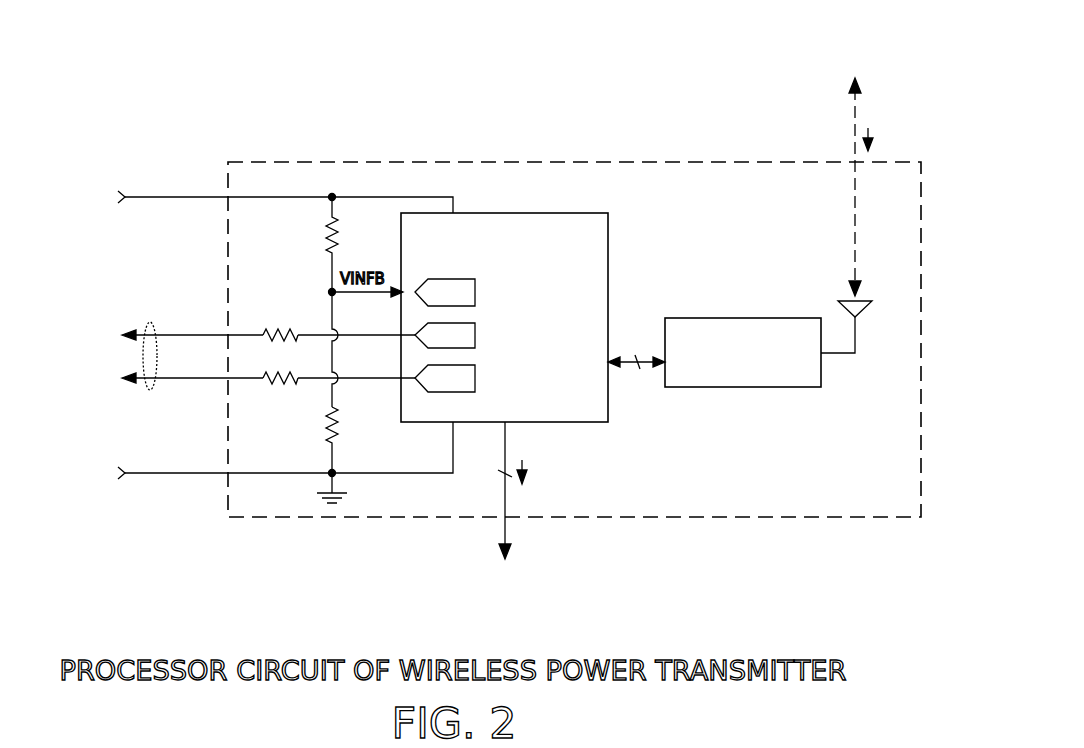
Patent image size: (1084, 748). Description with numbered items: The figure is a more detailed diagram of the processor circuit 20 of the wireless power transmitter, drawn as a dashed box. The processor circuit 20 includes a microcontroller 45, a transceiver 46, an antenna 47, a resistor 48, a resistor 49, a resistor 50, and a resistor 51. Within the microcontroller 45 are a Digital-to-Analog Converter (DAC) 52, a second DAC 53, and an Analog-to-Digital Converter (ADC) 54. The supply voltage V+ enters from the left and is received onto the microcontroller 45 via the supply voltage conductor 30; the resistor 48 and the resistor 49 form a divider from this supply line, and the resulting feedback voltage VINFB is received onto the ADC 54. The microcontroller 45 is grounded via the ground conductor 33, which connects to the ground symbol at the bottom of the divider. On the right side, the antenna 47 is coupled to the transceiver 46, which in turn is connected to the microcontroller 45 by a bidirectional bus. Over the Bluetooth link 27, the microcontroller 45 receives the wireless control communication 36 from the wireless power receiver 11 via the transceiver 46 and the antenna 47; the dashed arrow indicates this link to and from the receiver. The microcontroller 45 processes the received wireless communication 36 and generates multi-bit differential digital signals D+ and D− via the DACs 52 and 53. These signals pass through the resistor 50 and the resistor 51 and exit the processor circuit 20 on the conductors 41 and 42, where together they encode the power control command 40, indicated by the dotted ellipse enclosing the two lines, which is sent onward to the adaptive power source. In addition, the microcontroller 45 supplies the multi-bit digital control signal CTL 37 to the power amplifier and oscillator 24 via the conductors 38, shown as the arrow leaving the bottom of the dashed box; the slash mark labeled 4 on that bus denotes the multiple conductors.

The processor circuit 20 is at (327, 161).
The supply voltage conductor 30 is at (148, 197).
The resistor 48 is at (321, 235).
The resistor 49 is at (341, 432).
The ground conductor 33 is at (159, 478).
The power control command 40 is at (150, 322).
The conductor 41 is at (186, 335).
The conductor 42 is at (186, 378).
The resistor 50 is at (280, 327).
The resistor 51 is at (275, 386).
The microcontroller 45 is at (504, 317).
The Analog-to-Digital Converter 54 is at (478, 293).
The Digital-to-Analog Converter 52 is at (478, 336).
The Digital-to-Analog Converter 53 is at (478, 379).
The conductors 38 is at (506, 534).
The conductor count marker 4 is at (498, 473).
The digital control signal CTL 37 is at (524, 469).
The power amplifier and oscillator 24 is at (504, 593).
The transceiver 46 is at (743, 352).
The antenna 47 is at (857, 331).
The Bluetooth link 27 is at (855, 144).
The wireless power receiver 11 is at (853, 39).
The wireless control communication 36 is at (870, 136).